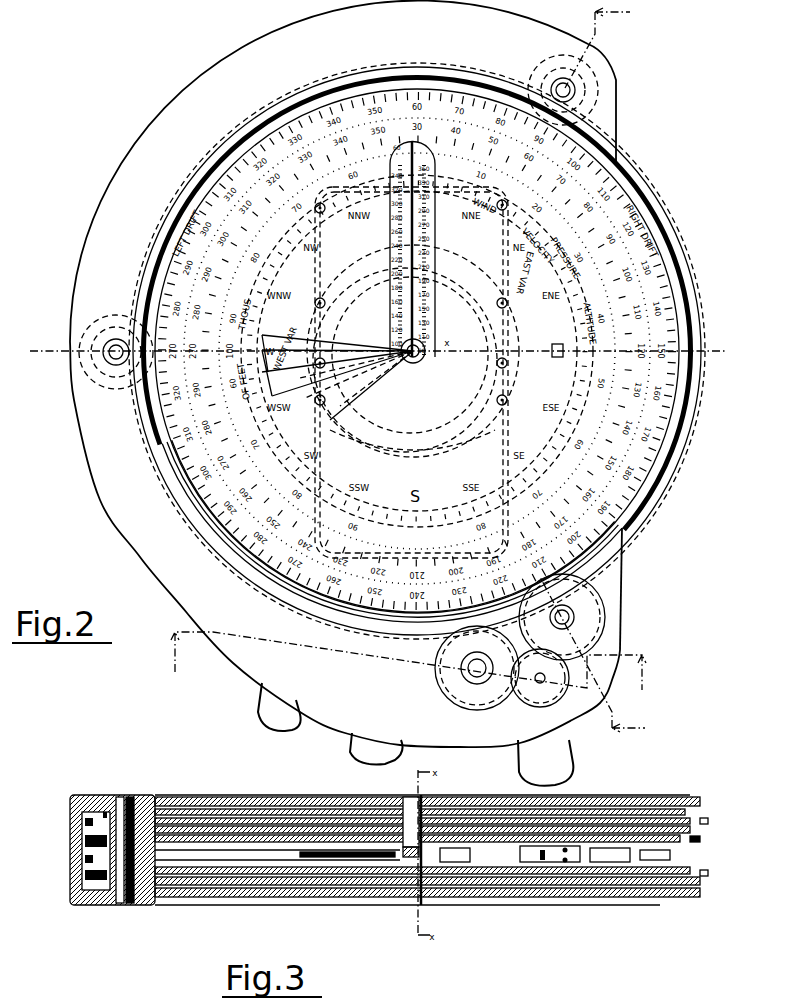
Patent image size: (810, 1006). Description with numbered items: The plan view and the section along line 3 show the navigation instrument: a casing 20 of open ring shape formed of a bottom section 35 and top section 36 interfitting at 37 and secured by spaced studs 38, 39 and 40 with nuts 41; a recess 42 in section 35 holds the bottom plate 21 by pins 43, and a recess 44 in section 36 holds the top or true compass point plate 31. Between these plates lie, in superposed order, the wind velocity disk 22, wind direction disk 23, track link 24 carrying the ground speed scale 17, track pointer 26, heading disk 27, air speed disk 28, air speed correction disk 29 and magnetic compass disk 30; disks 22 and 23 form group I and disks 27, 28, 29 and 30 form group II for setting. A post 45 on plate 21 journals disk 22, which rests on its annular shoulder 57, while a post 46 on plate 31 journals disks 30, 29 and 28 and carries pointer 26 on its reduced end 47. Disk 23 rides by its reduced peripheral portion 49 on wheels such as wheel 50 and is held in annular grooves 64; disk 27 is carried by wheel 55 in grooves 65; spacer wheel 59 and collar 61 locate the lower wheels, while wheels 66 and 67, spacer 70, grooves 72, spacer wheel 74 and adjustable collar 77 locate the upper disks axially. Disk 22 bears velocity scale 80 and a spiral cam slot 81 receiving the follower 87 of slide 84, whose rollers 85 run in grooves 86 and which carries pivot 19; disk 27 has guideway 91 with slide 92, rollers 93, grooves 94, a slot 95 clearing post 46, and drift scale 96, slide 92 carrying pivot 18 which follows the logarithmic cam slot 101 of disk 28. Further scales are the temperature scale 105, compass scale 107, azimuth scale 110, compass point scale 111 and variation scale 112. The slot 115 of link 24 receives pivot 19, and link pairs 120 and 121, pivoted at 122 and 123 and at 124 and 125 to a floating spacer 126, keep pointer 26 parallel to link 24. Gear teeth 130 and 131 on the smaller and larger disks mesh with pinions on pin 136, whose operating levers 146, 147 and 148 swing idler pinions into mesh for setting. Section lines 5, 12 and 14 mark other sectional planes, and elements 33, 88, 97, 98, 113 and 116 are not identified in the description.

In FIG. 2, the section line 3 is at (726, 364).
In FIG. 2, the section line 5- 5 is at (599, 370).
In FIG. 2, the section line 12- 12 is at (408, 667).
In FIG. 2, the computer body 14 is at (340, 728).
In FIG. 3, the computer body 14 is at (338, 770).
In FIG. 2, the scale 17 is at (436, 304).
In FIG. 3, the scale 17 is at (455, 851).
In FIG. 2, the pivot or stud 18 is at (424, 399).
In FIG. 2, the pivot or stud 19 is at (428, 357).
In FIG. 3, the pivot or stud 19 is at (386, 897).
In FIG. 2, the casing 20 is at (92, 503).
In FIG. 3, the casing 20 is at (64, 869).
In FIG. 3, the bottom plate 21 is at (676, 897).
In FIG. 2, the wind velocity disk 22 is at (712, 461).
In FIG. 3, the wind velocity disk 22 is at (690, 879).
In FIG. 2, the wind direction disk 23 is at (698, 534).
In FIG. 3, the track link 24 is at (482, 861).
In FIG. 3, the track pointer 26 is at (691, 858).
In FIG. 2, the heading disk 27 is at (698, 534).
In FIG. 3, the heading disk 27 is at (662, 867).
In FIG. 2, the air speed disk 28 is at (684, 452).
In FIG. 3, the air speed disk 28 is at (640, 842).
In FIG. 2, the air speed correction disk 29 is at (698, 534).
In FIG. 3, the air speed correction disk 29 is at (640, 809).
In FIG. 2, the magnetic compass disk 30 is at (652, 500).
In FIG. 3, the magnetic compass disk 30 is at (662, 818).
In FIG. 2, the top or true compass point plate 31 is at (680, 425).
In FIG. 3, the top or true compass point plate 31 is at (676, 826).
In FIG. 3, the shaft 33 is at (170, 845).
In FIG. 3, the bottom section 35 is at (92, 905).
In FIG. 3, the top section 36 is at (92, 797).
In FIG. 3, the interfit 37 is at (83, 850).
In FIG. 2, the stud 38 is at (570, 606).
In FIG. 2, the stud 39 is at (115, 366).
In FIG. 3, the stud 39 is at (130, 798).
In FIG. 2, the stud 40 is at (575, 90).
In FIG. 3, the nuts 41 is at (116, 904).
In FIG. 3, the circular recess 42 is at (130, 905).
In FIG. 3, the pins 43 is at (155, 900).
In FIG. 3, the circular recess 44 is at (140, 798).
In FIG. 3, the cylindrical post 45 is at (411, 898).
In FIG. 3, the cylindrical post 46 is at (420, 798).
In FIG. 3, the reduced end 47 is at (360, 860).
In FIG. 3, the reduced peripheral portion 49 is at (185, 850).
In FIG. 2, the roller or wheel 50 is at (573, 354).
In FIG. 3, the roller or wheel 55 is at (85, 840).
In FIG. 3, the annular shoulder 57 is at (428, 897).
In FIG. 3, the spacer wheel 59 is at (104, 905).
In FIG. 3, the adjustable collar 61 is at (85, 884).
In FIG. 3, the annular grooves 64 is at (84, 876).
In FIG. 3, the annular grooves 65 is at (322, 897).
In FIG. 3, the wheel 66 is at (509, 857).
In FIG. 3, the wheel 67 is at (83, 815).
In FIG. 3, the spacer 70 is at (82, 822).
In FIG. 3, the annular grooves 72 is at (82, 812).
In FIG. 3, the spacer wheel 74 is at (119, 798).
In FIG. 3, the adjustable collar 77 is at (160, 848).
In FIG. 2, the scale 80 is at (370, 480).
In FIG. 2, the spiral cam slot 81 is at (465, 392).
In FIG. 3, the spiral cam slot 81 is at (470, 897).
In FIG. 2, the slide 84 is at (500, 405).
In FIG. 3, the slide 84 is at (340, 897).
In FIG. 2, the disk-like rollers 85 is at (536, 326).
In FIG. 3, the disk-like rollers 85 is at (524, 897).
In FIG. 3, the grooves 86 is at (540, 897).
In FIG. 2, the pin or follower 87 is at (320, 258).
In FIG. 3, the pin or follower 87 is at (396, 897).
In FIG. 2, the circle 88 is at (446, 455).
In FIG. 2, the diametric guideway 91 is at (505, 498).
In FIG. 2, the slide 92 is at (380, 440).
In FIG. 2, the disk rollers 93 is at (505, 206).
In FIG. 2, the grooves 94 is at (350, 470).
In FIG. 3, the grooves 94 is at (535, 859).
In FIG. 2, the diametric slot 95 is at (322, 204).
In FIG. 2, the arcuate scale 96 is at (506, 363).
In FIG. 2, the scale 97 is at (355, 259).
In FIG. 2, the rivet 98 is at (431, 401).
In FIG. 2, the cam slot 101 is at (470, 300).
In FIG. 3, the cam slot 101 is at (258, 798).
In FIG. 2, the scale 105 is at (566, 238).
In FIG. 2, the scale 107 is at (636, 302).
In FIG. 2, the scale 110 is at (640, 316).
In FIG. 2, the scale 111 is at (556, 358).
In FIG. 2, the arcuate scale 112 is at (480, 284).
In FIG. 3, the arcuate scale 112 is at (494, 854).
In FIG. 2, the index 113 is at (427, 379).
In FIG. 2, the longitudinal slot 115 is at (428, 364).
In FIG. 3, the longitudinal slot 115 is at (362, 897).
In FIG. 3, the pointer 116 is at (467, 851).
In FIG. 2, the link pair 120 is at (355, 389).
In FIG. 3, the link pair 120 is at (252, 897).
In FIG. 3, the link pair 121 is at (280, 897).
In FIG. 2, the pivots 122 is at (399, 396).
In FIG. 3, the pivots 122 is at (231, 864).
In FIG. 3, the pivots 123 is at (231, 854).
In FIG. 2, the pivots 124 is at (321, 336).
In FIG. 2, the pivots 125 is at (324, 340).
In FIG. 3, the pivots 125 is at (241, 864).
In FIG. 2, the floating spacer 126 is at (250, 372).
In FIG. 3, the peripheral gear teeth 130 is at (690, 866).
In FIG. 3, the peripheral gear teeth 131 is at (700, 882).
In FIG. 2, the pin 136 is at (502, 668).
In FIG. 2, the operating lever 146 is at (264, 715).
In FIG. 2, the operating lever 147 is at (403, 753).
In FIG. 2, the operating lever 148 is at (560, 750).
In FIG. 3, the group I is at (640, 897).
In FIG. 3, the group II is at (565, 800).